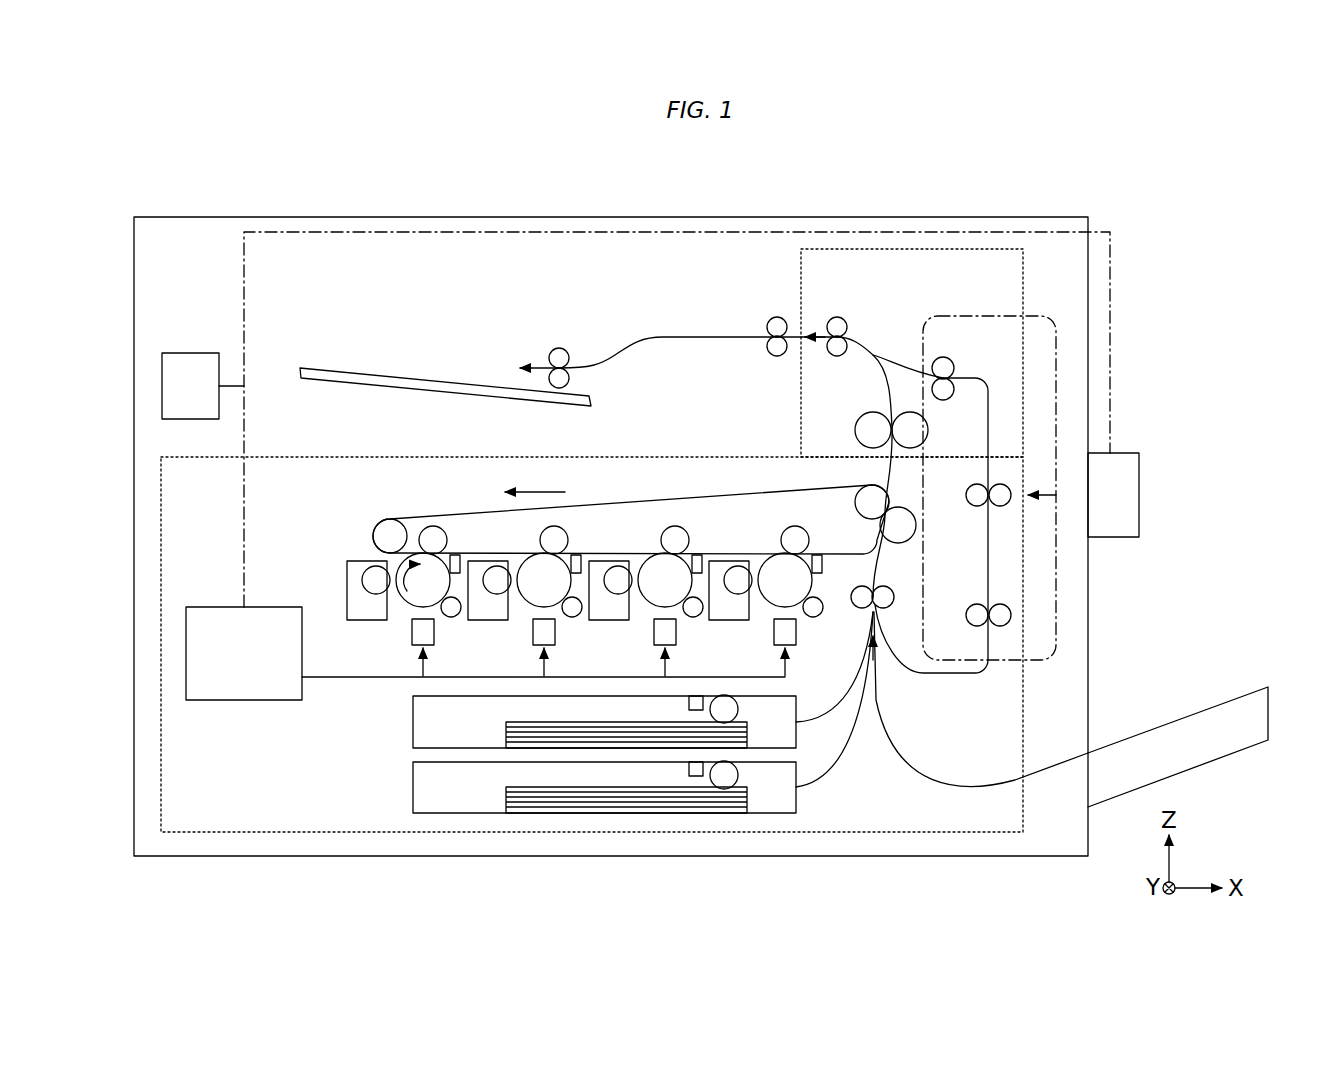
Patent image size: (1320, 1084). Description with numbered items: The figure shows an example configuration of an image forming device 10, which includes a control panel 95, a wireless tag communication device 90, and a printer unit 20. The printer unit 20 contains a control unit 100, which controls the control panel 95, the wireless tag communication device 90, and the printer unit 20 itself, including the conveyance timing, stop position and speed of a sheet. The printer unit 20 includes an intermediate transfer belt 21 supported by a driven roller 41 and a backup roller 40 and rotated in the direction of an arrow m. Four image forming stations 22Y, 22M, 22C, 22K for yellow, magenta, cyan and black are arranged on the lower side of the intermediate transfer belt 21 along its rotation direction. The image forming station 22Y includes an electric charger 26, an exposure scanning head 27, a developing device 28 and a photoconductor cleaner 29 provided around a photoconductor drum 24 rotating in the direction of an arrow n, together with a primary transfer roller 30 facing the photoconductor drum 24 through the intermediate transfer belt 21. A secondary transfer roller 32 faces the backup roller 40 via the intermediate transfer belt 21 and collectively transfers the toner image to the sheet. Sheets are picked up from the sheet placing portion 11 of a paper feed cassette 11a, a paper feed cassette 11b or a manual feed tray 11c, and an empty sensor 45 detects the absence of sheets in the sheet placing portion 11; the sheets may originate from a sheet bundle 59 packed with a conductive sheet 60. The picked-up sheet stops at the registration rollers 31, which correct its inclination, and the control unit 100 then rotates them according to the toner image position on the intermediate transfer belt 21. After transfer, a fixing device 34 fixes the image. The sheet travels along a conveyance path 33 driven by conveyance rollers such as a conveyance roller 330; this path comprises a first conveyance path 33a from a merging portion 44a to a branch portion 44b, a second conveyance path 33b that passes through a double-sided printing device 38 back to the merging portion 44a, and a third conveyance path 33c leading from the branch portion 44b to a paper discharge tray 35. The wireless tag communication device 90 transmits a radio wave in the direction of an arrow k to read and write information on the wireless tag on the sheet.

The image forming device 10 is at (284, 204).
The sheet placing portion 11 is at (548, 754).
The paper feed cassette 11a is at (413, 718).
The paper feed cassette 11b is at (568, 787).
The manual feed tray 11c is at (1160, 725).
The printer unit 20 is at (204, 457).
The intermediate transfer belt 21 is at (683, 497).
The image forming station 22Y is at (397, 575).
The image forming station 22M is at (562, 620).
The image forming station 22C is at (680, 620).
The image forming station 22K is at (767, 620).
The photoconductor drum 24 is at (398, 563).
The electric charger 26 is at (462, 612).
The exposure scanning head 27 is at (412, 640).
The developing device 28 is at (347, 575).
The photoconductor cleaner 29 is at (457, 555).
The primary transfer roller 30 is at (433, 526).
The registration rollers 31 is at (895, 597).
The secondary transfer roller 32 is at (901, 544).
The conveyance path 33 is at (942, 699).
The first conveyance path 33a is at (892, 468).
The second conveyance path 33b is at (903, 367).
The third conveyance path 33c is at (797, 330).
The fixing device 34 is at (885, 412).
The paper discharge tray 35 is at (430, 372).
The double-sided printing device 38 is at (1032, 316).
The backup roller 40 is at (855, 500).
The driven roller 41 is at (378, 523).
The merging portion 44a is at (877, 614).
The branch portion 44b is at (873, 350).
The empty sensor 45 is at (693, 776).
The sheet bundle 59 is at (474, 855).
The conductive sheet 60 is at (498, 798).
The wireless tag communication device 90 is at (1120, 453).
The control panel 95 is at (190, 352).
The control unit 100 is at (240, 700).
The conveyance roller 330 is at (975, 506).
The arrow k is at (1053, 486).
The arrow m is at (540, 492).
The arrow n is at (410, 590).